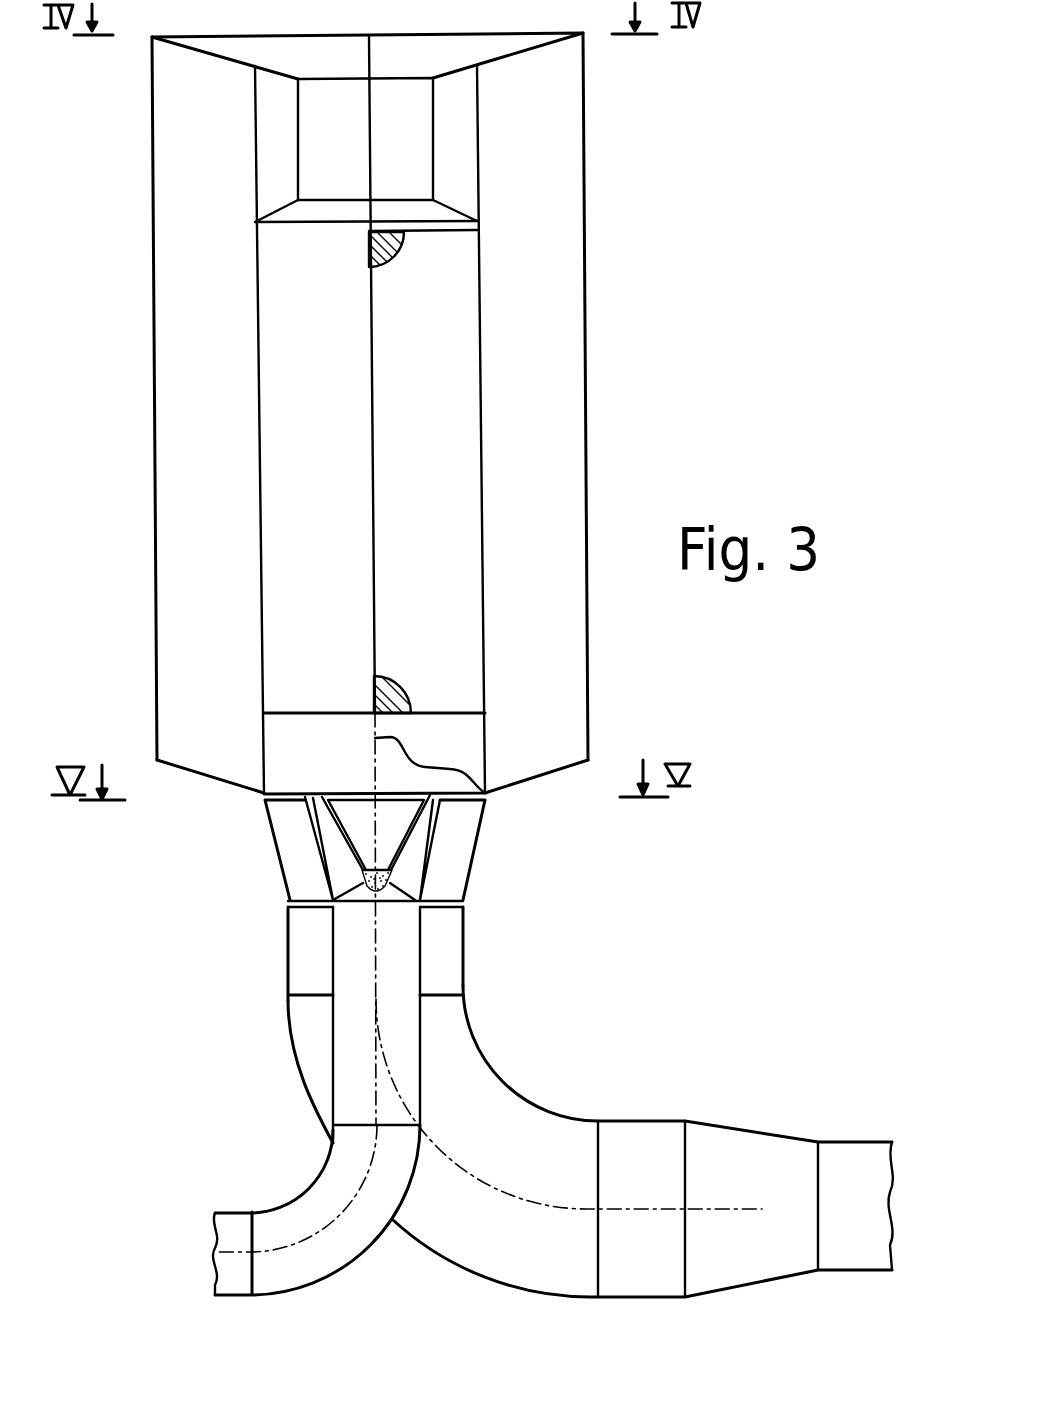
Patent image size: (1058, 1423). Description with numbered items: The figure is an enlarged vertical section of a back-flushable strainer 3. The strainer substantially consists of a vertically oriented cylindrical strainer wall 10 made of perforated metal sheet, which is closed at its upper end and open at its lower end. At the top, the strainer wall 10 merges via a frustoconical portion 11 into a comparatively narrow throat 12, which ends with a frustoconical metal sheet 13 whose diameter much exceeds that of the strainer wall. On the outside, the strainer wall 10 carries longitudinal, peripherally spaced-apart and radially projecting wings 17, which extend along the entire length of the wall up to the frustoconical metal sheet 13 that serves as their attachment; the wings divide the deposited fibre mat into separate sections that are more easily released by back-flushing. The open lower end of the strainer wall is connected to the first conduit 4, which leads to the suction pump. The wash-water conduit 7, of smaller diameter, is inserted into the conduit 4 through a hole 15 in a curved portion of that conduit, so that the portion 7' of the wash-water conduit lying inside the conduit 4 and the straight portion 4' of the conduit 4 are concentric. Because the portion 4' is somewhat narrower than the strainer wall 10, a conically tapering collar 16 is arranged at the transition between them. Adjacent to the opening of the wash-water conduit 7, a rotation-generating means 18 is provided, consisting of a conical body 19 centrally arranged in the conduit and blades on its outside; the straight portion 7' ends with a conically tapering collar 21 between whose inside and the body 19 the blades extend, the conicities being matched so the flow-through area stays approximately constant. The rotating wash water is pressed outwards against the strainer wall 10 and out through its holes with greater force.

The strainer 3 is at (600, 457).
The first conduit 4 is at (590, 1172).
The straight portion of the first conduit 4' is at (409, 953).
The wash-water conduit 7 is at (316, 1242).
The straight portion of the wash-water conduit 7' is at (326, 1025).
The strainer wall 10 is at (450, 402).
The frustoconical portion 11 is at (290, 214).
The throat 12 is at (415, 148).
The frustoconical metal sheet 13 is at (513, 53).
The hole 15 is at (394, 1222).
The conically tapering collar 16 is at (478, 829).
The wings 17 is at (562, 237).
The rotation-generating means 18 is at (342, 856).
The conical body 19 is at (353, 797).
The conically tapering collar 21 is at (430, 857).